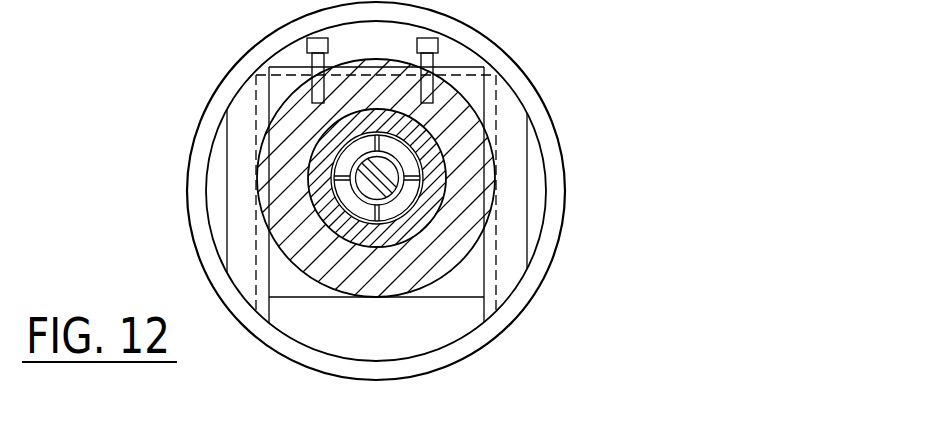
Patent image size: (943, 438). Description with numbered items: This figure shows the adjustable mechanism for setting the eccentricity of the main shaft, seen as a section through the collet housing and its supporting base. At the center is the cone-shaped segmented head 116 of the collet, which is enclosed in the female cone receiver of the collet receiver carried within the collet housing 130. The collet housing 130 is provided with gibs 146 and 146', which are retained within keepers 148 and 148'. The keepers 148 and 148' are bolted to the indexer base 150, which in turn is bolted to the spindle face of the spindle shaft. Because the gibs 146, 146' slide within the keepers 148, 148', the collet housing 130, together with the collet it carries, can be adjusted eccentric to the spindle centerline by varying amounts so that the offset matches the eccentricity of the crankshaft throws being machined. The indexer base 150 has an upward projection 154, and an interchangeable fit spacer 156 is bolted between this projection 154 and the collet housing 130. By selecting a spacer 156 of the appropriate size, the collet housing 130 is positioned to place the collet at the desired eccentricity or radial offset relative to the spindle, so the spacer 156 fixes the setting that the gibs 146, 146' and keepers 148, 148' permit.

The cone-shaped segmented head 116 is at (420, 187).
The collet housing 130 is at (447, 249).
The gib 146 is at (188, 195).
The gib 146' is at (583, 194).
The keeper 148 is at (165, 191).
The keeper 148' is at (595, 191).
The indexer base 150 is at (462, 323).
The upward projection 154 is at (457, 53).
The interchangeable fit spacer 156 is at (470, 75).